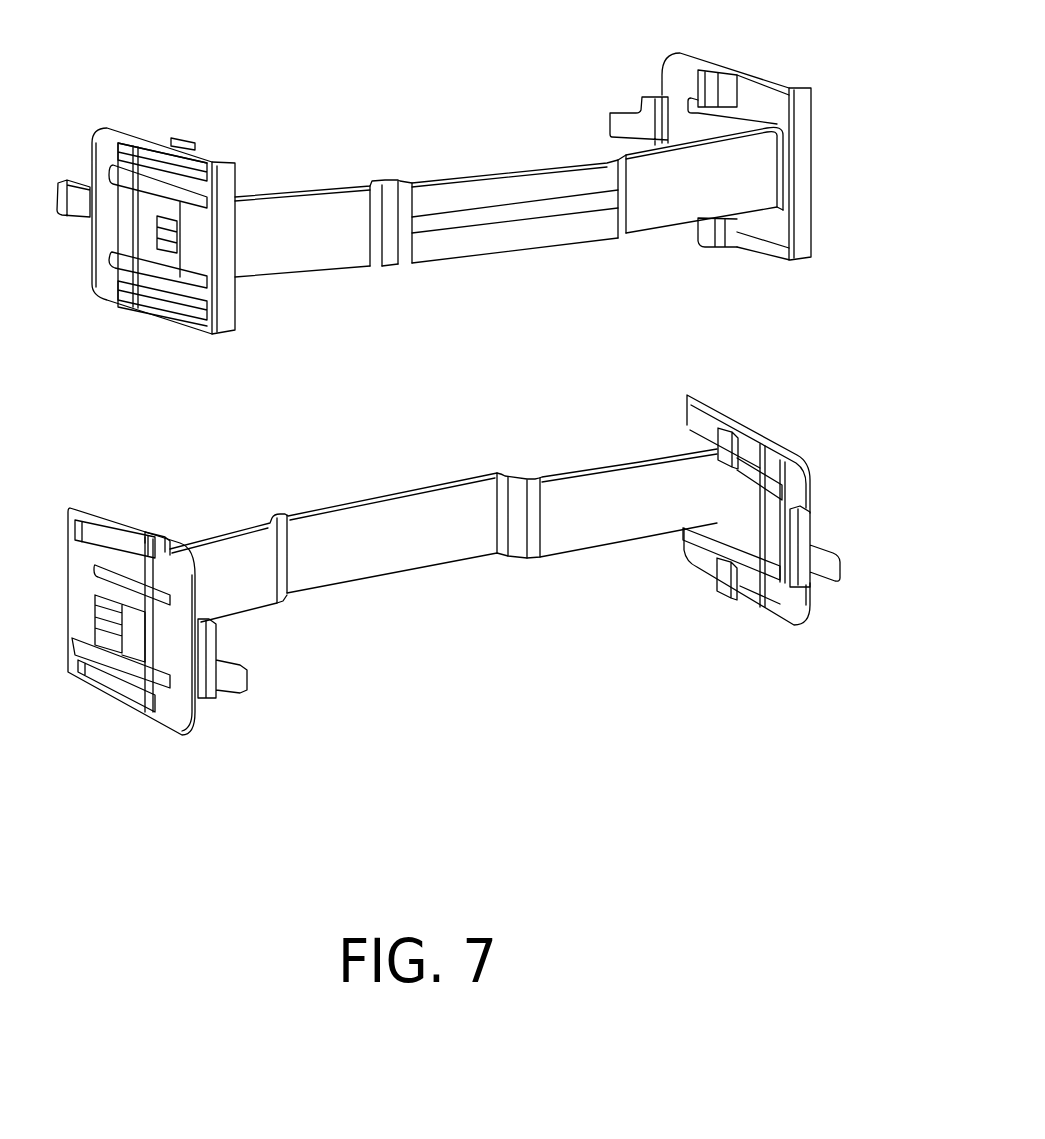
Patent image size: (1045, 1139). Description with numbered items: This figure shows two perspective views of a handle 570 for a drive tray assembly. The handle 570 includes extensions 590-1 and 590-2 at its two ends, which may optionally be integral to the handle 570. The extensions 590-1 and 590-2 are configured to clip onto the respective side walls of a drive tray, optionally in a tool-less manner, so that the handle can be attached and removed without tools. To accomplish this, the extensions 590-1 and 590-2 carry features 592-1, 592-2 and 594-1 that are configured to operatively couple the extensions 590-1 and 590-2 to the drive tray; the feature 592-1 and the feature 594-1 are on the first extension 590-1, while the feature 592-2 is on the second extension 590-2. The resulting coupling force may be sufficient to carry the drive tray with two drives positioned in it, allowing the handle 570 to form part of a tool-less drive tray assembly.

The handle 570 is at (476, 374).
The extension 590-1 is at (723, 68).
The extension 590-2 is at (210, 157).
The feature 592-1 is at (823, 572).
The feature 592-2 is at (247, 680).
The feature 594-1 is at (728, 456).